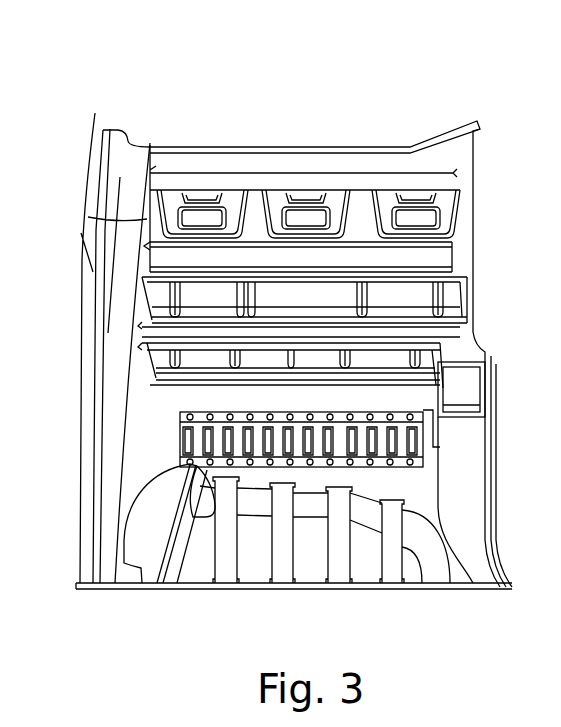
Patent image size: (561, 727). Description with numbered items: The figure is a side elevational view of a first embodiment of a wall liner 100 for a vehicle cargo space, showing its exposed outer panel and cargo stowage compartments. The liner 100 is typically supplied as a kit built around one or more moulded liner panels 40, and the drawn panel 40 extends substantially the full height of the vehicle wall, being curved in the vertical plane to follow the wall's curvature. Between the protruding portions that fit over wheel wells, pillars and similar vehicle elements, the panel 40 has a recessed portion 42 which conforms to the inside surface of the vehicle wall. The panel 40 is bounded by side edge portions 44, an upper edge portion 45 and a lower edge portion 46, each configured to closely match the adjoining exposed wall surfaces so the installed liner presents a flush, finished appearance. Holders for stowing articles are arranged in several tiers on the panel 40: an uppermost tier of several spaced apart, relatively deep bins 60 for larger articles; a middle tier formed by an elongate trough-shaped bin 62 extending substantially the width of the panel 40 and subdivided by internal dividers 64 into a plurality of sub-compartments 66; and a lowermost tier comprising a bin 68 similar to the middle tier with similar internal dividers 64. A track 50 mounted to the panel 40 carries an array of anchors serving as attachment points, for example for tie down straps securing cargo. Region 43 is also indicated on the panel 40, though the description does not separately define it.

The wall liner 100 is at (204, 96).
The moulded liner panel 40 is at (474, 167).
The recessed portion 42 is at (410, 406).
The connector receptacle region 43 is at (155, 457).
The side edge portion 44 is at (95, 118).
The upper edge portion 45 is at (412, 167).
The lower edge portion 46 is at (480, 592).
The track 50 is at (410, 443).
The deep bin 60 is at (272, 225).
The trough-shaped bin 62 is at (178, 340).
The internal divider 64 is at (237, 367).
The sub-compartment 66 is at (215, 307).
The lowermost bin 68 is at (182, 465).